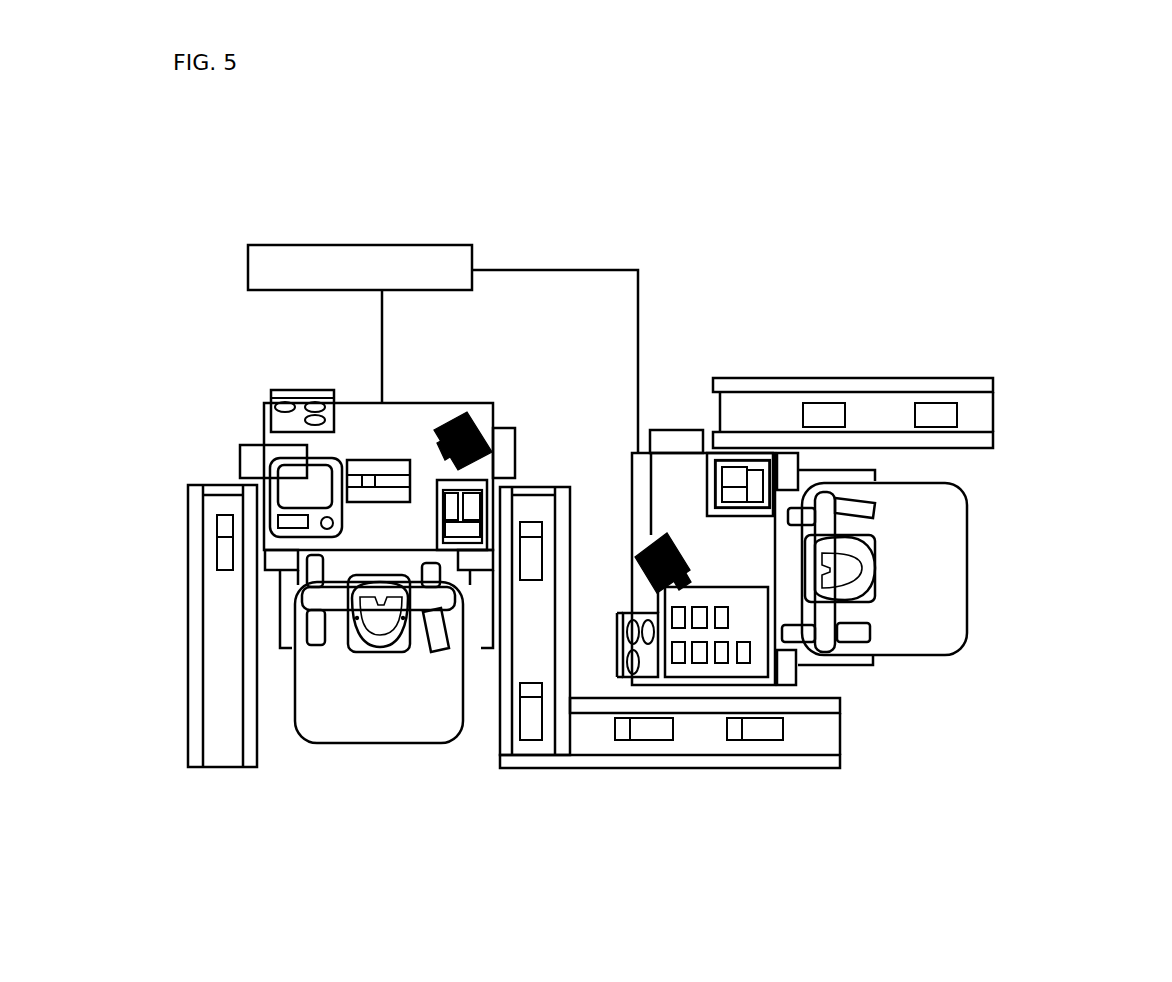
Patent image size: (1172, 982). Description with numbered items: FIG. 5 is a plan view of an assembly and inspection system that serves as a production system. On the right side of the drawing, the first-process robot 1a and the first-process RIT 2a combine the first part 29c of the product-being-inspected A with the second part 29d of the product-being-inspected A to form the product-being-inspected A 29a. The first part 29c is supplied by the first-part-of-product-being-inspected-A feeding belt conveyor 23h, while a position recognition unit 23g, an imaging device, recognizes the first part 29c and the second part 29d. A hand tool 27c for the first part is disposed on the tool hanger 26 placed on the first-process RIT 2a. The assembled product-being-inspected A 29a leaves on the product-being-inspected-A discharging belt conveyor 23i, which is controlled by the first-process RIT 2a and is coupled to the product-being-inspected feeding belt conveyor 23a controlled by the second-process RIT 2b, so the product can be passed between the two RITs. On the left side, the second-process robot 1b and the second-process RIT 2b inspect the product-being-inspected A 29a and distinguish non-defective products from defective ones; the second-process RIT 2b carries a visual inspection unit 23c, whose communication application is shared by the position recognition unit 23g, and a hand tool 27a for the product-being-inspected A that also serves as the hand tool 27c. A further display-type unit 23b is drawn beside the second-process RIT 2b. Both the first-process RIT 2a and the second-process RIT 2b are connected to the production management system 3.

The production management system 3 is at (266, 246).
The first-process RIT 2a is at (812, 220).
The second-process RIT 2b is at (410, 226).
The first-process robot 1a is at (967, 563).
The second-process robot 1b is at (360, 740).
The product-being-inspected feeding belt conveyor 23a is at (498, 712).
The display device 23b is at (222, 768).
The visual inspection unit 23c is at (474, 418).
The position recognition unit 23g is at (642, 552).
The first-part-of-product-being-inspected-A feeding belt conveyor 23h is at (993, 410).
The product-being-inspected-A discharging belt conveyor 23i is at (705, 768).
The tool hanger 26 is at (755, 460).
The hand tool for the product-being-inspected A 27a is at (441, 488).
The hand tool for the first part of the product-being-inspected A 27c is at (742, 475).
The product-being-inspected A 29a is at (528, 733).
The first part of the product-being-inspected A 29c is at (937, 420).
The second part of the product-being-inspected A 29d is at (743, 653).